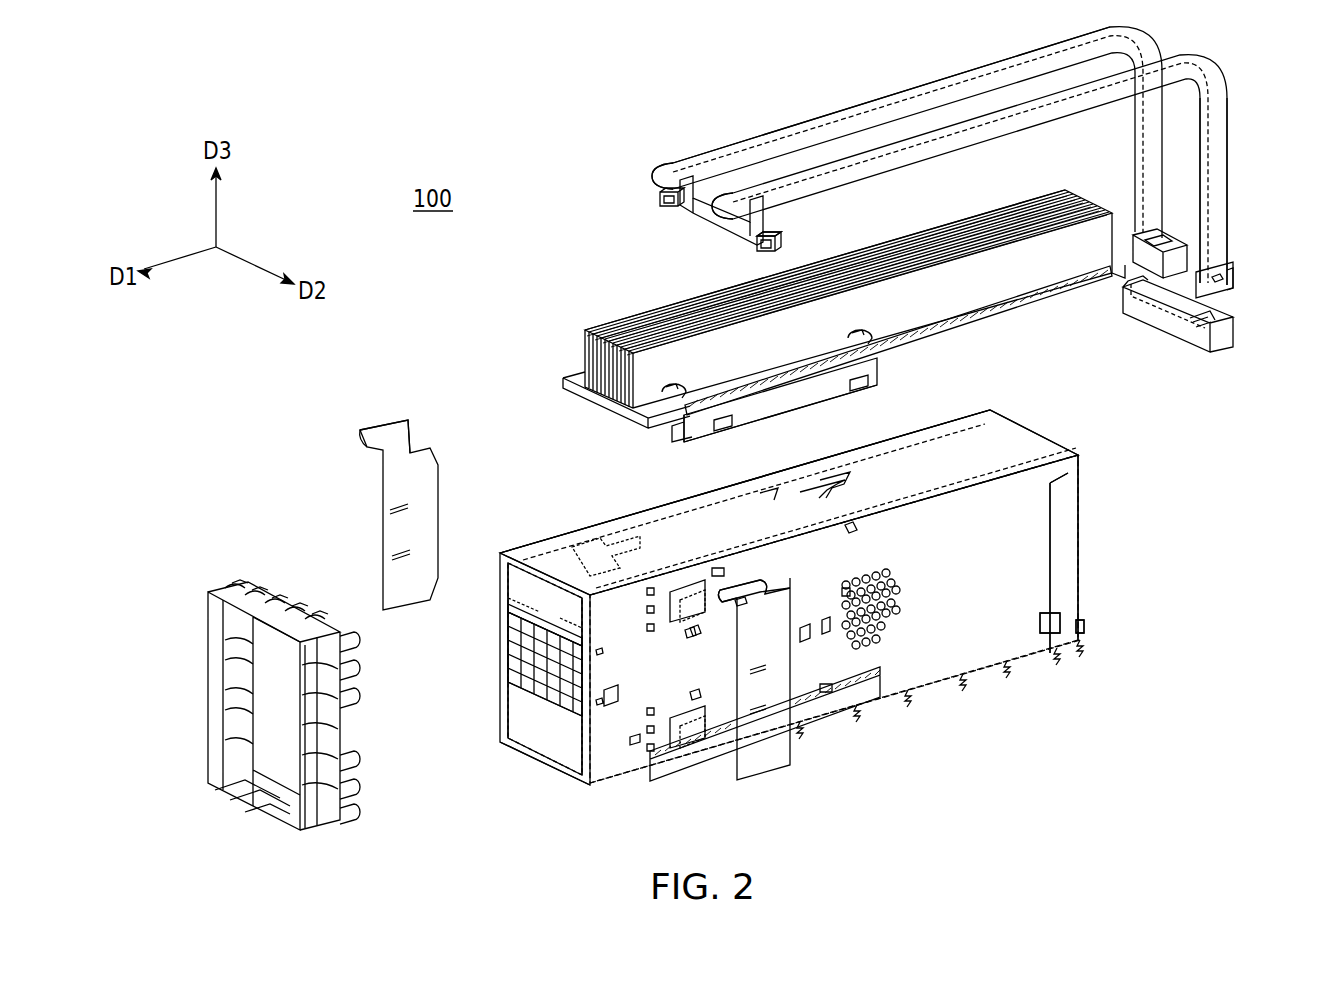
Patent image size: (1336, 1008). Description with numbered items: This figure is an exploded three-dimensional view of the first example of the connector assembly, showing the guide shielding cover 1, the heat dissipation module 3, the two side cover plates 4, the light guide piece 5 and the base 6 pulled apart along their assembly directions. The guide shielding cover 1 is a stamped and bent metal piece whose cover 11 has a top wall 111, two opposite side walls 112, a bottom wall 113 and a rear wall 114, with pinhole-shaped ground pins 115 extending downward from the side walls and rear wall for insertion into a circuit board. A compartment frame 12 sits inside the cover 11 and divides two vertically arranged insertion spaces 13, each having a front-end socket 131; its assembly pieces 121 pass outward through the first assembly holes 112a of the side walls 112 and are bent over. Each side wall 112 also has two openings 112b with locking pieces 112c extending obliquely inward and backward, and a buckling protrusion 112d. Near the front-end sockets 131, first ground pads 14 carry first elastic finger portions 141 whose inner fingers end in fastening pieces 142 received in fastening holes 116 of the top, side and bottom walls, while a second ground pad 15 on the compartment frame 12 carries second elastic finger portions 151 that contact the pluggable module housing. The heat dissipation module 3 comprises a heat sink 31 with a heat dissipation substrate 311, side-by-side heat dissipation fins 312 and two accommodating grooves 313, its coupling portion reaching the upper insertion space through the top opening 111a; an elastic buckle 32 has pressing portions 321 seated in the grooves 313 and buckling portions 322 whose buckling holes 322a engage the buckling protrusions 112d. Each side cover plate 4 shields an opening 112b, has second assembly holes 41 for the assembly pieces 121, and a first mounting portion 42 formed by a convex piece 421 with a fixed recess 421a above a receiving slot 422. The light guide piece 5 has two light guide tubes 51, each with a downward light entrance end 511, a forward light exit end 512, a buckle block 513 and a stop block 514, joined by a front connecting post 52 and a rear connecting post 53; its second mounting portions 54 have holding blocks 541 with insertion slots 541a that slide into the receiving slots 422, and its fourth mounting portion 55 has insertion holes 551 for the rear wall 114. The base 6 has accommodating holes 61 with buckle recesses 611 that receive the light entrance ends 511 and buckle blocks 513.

The guide shielding cover 1 is at (536, 772).
The cover 11 is at (566, 778).
The compartment frame 12 is at (562, 585).
The insertion space 13 is at (536, 592).
The front-end socket 131 is at (506, 612).
The first ground pad 14 is at (245, 588).
The first elastic finger portion 141 is at (315, 618).
The fastening piece 142 is at (338, 614).
The second ground pad 15 is at (520, 696).
The second elastic finger portion 151 is at (510, 632).
The top wall 111 is at (556, 548).
The top opening 111a is at (588, 538).
The side wall 112 is at (980, 643).
The first assembly hole 112a is at (841, 593).
The opening 112b is at (676, 588).
The locking piece 112c is at (686, 596).
The buckling protrusion 112d is at (727, 565).
The bottom wall 113 is at (724, 760).
The rear wall 114 is at (1086, 503).
The ground pin 115 is at (855, 720).
The fastening hole 116 is at (636, 740).
The assembly piece 121 is at (900, 599).
The heat dissipation module 3 is at (665, 302).
The heat sink 31 is at (650, 308).
The heat dissipation substrate 311 is at (570, 382).
The heat dissipation fin 312 is at (620, 316).
The accommodating groove 313 is at (690, 392).
The elastic buckle 32 is at (882, 372).
The pressing portion 321 is at (678, 388).
The buckling portion 322 is at (808, 396).
The buckling hole 322a is at (878, 382).
The side cover plate 4 is at (387, 426).
The second assembly hole 41 is at (397, 556).
The first mounting portion 42 is at (376, 432).
The convex piece 421 is at (692, 612).
The fixed recess 421a is at (742, 605).
The receiving slot 422 is at (762, 605).
The light guide piece 5 is at (916, 78).
The light guide tube 51 is at (930, 128).
The light entrance end 511 is at (1215, 294).
The light exit end 512 is at (722, 206).
The buckle block 513 is at (1224, 280).
The stop block 514 is at (1230, 258).
The front connecting post 52 is at (702, 214).
The rear connecting post 53 is at (1212, 230).
The second mounting portion 54 is at (662, 195).
The holding block 541 is at (668, 204).
The insertion slot 541a is at (772, 238).
The fourth mounting portion 55 is at (1136, 236).
The insertion hole 551 is at (1152, 247).
The base 6 is at (1166, 343).
The accommodating hole 61 is at (1125, 288).
The buckle recess 611 is at (1135, 312).